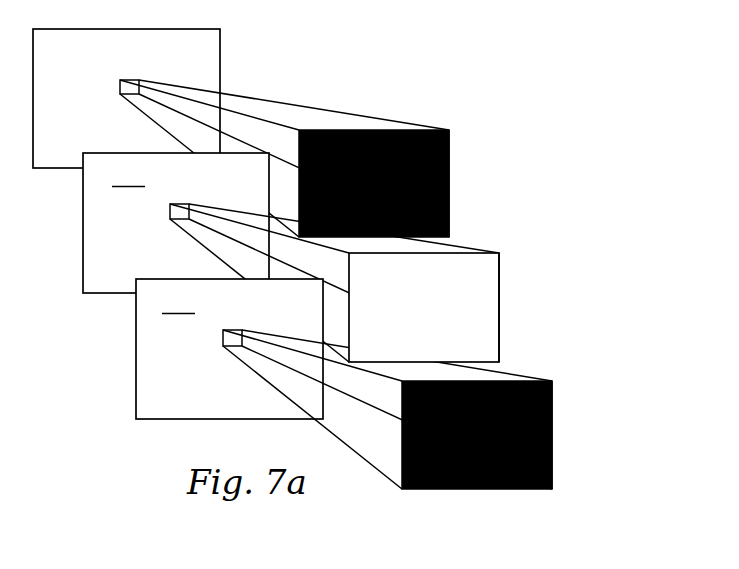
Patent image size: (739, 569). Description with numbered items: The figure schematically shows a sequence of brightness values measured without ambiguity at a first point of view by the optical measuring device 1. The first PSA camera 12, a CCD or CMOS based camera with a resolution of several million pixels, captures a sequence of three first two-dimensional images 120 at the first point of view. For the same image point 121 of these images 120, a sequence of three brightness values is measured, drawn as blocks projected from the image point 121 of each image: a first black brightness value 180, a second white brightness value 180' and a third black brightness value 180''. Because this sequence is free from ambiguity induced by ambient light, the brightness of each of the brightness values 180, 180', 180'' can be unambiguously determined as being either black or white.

The optical measuring device 1 is at (356, 259).
The first PSA camera 12 is at (291, 259).
The first 2D images 120 is at (62, 316).
The 2D image point 121 is at (449, 212).
The first black brightness value 180 is at (432, 183).
The second white brightness value 180' is at (486, 307).
The third black brightness value 180'' is at (542, 435).